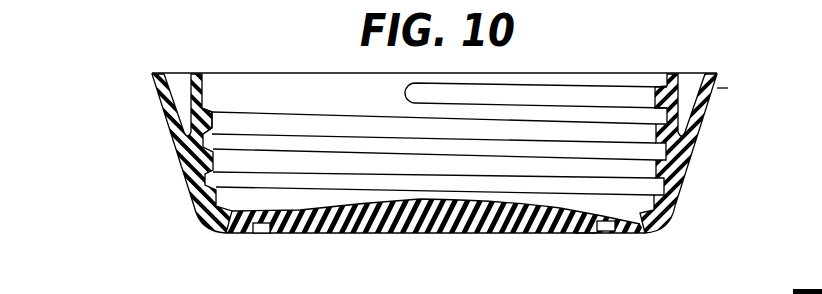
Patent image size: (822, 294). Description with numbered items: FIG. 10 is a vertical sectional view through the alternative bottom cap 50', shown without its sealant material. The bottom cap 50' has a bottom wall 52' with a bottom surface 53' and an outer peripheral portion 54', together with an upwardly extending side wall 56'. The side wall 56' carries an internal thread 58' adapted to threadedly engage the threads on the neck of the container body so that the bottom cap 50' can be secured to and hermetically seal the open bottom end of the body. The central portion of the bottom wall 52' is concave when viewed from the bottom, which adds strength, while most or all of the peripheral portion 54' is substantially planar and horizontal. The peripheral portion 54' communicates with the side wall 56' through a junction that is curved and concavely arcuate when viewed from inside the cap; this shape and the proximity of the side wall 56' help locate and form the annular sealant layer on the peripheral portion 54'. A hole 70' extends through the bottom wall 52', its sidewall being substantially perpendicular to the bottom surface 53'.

The bottom cap 50' is at (435, 147).
The bottom wall 52' is at (436, 147).
The bottom surface 53' is at (435, 254).
The peripheral portion 54' is at (607, 251).
The side wall 56' is at (192, 154).
The internal thread 58' is at (248, 109).
The hole 70' is at (277, 245).